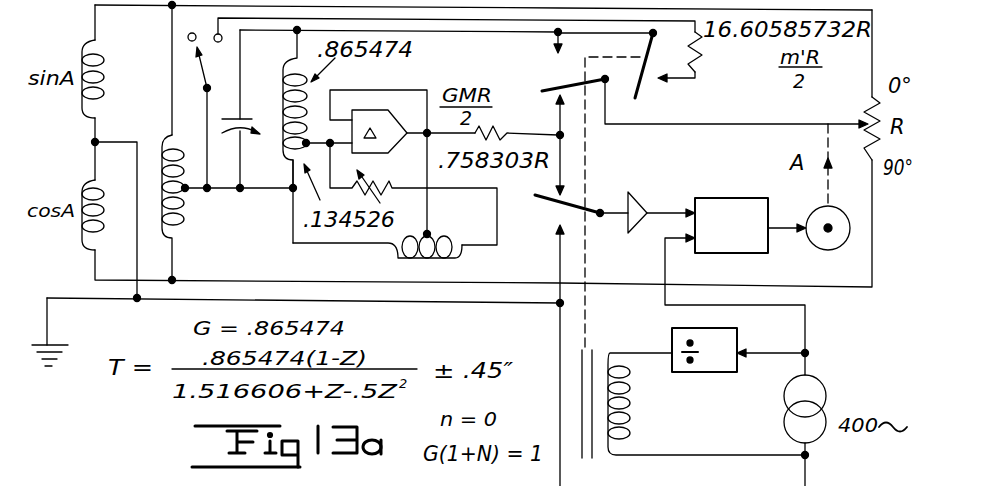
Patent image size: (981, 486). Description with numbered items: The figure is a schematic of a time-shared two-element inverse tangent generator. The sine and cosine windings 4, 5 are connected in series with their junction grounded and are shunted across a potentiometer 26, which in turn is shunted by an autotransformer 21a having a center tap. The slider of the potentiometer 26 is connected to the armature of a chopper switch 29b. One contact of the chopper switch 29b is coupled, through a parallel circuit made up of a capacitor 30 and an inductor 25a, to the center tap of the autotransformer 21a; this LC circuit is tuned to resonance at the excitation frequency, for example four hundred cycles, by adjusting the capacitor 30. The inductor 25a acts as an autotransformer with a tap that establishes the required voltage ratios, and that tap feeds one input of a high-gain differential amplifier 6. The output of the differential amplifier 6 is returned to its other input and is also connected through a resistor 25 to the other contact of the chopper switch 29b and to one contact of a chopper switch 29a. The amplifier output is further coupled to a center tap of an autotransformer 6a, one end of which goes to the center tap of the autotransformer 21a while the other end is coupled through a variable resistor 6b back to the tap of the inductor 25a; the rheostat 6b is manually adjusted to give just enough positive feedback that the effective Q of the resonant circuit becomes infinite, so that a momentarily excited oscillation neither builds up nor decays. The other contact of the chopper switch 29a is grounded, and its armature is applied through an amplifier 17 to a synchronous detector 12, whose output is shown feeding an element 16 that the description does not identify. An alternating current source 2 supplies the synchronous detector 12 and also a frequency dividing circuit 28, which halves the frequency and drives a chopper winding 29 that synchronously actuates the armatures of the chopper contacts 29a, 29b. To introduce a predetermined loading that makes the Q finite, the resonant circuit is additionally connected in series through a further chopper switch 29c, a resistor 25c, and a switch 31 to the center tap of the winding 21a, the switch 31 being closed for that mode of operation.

The sine winding 4 is at (106, 78).
The cosine winding 5 is at (103, 211).
The switch 31 is at (203, 70).
The capacitor 30 is at (258, 118).
The autotransformer 21a is at (183, 230).
The inductor 25a is at (278, 158).
The high-gain differential amplifier 6 is at (392, 118).
The autotransformer 6a is at (396, 254).
The variable resistor 6b is at (374, 180).
The resistor 25 is at (490, 127).
The resistor 25c is at (700, 66).
The chopper switch 29a is at (540, 196).
The chopper switch 29b is at (546, 90).
The chopper switch 29c is at (636, 92).
The potentiometer 26 is at (862, 99).
The amplifier 17 is at (648, 192).
The synchronous detector 12 is at (728, 197).
The meter 16 is at (826, 250).
The frequency dividing circuit 28 is at (703, 372).
The chopper winding 29 is at (629, 416).
The alternating current source 2 is at (830, 392).